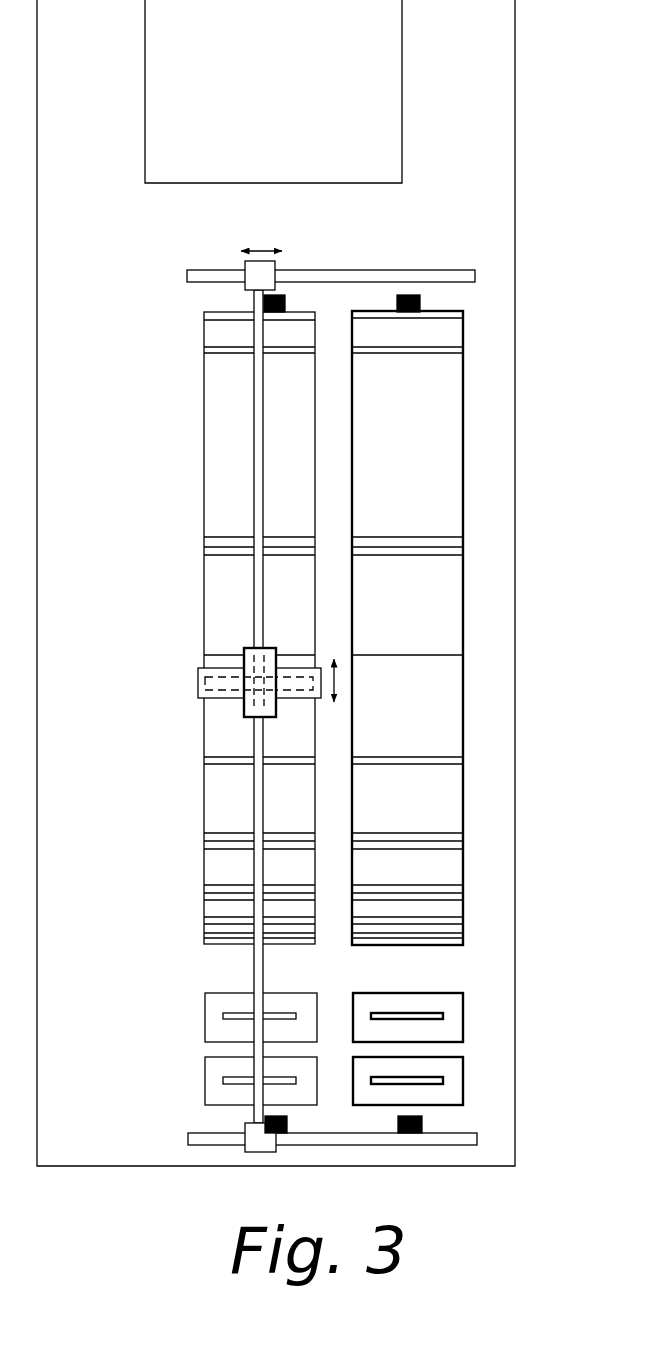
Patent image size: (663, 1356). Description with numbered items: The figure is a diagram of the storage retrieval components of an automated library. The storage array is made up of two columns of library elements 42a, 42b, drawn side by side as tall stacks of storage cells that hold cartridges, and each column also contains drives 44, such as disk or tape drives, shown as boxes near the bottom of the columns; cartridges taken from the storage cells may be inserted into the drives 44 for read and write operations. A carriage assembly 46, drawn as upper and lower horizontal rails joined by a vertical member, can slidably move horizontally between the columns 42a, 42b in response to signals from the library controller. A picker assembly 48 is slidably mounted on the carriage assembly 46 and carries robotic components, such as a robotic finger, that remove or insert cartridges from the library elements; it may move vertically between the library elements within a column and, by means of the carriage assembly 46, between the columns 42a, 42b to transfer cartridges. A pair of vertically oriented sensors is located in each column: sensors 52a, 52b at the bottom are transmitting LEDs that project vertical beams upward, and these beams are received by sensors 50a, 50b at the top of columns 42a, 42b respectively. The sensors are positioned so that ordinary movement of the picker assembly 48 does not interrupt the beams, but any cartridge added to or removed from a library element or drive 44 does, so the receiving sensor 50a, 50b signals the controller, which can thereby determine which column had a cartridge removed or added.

The column of library elements 42a is at (185, 425).
The column of library elements 42b is at (474, 411).
The drives 44 is at (205, 1075).
The carriage assembly 46 is at (214, 246).
The picker assembly 48 is at (181, 683).
The sensor 50a is at (287, 300).
The sensor 50b is at (406, 295).
The sensor 52a is at (288, 1125).
The sensor 52b is at (424, 1123).